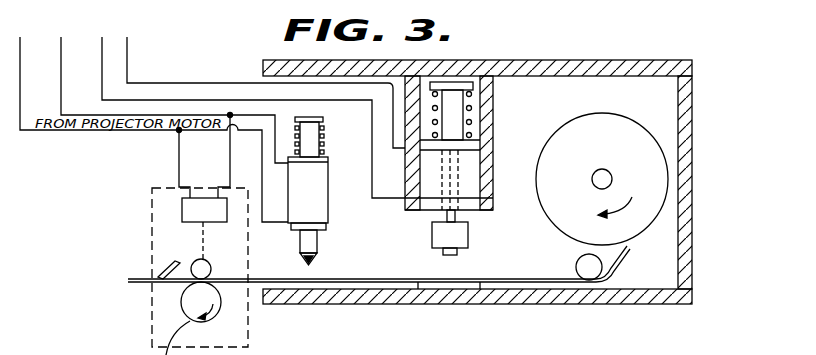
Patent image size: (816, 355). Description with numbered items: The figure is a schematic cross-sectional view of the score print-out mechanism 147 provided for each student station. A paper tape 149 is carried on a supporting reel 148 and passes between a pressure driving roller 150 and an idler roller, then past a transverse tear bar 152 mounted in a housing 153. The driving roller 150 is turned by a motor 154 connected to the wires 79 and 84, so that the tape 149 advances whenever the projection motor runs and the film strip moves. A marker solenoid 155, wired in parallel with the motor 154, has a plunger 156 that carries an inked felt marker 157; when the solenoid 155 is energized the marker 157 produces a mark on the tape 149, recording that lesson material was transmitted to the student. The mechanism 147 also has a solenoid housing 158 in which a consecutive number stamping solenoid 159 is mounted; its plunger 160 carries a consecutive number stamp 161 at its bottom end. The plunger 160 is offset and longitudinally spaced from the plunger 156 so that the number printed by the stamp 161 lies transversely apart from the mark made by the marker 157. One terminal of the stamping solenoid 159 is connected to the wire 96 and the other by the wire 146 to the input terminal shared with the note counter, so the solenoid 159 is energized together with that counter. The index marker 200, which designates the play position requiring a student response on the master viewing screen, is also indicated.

The wire 84 is at (20, 92).
The wire 79 is at (61, 72).
The wire 96 is at (102, 63).
The wire 146 is at (128, 68).
The score print-out mechanism 147 is at (700, 192).
The supporting reel 148 is at (564, 130).
The paper tape 149 is at (529, 283).
The pressure driving roller 150 is at (205, 259).
The transverse tear bar 152 is at (165, 268).
The housing 153 is at (150, 310).
The motor 154 is at (182, 207).
The marker solenoid 155 is at (329, 185).
The plunger 156 is at (318, 245).
The inked felt marker 157 is at (302, 258).
The solenoid housing 158 is at (487, 149).
The consecutive number stamping solenoid 159 is at (474, 184).
The plunger 160 is at (450, 117).
The consecutive number stamp 161 is at (440, 237).
The index marker 200 is at (379, 300).